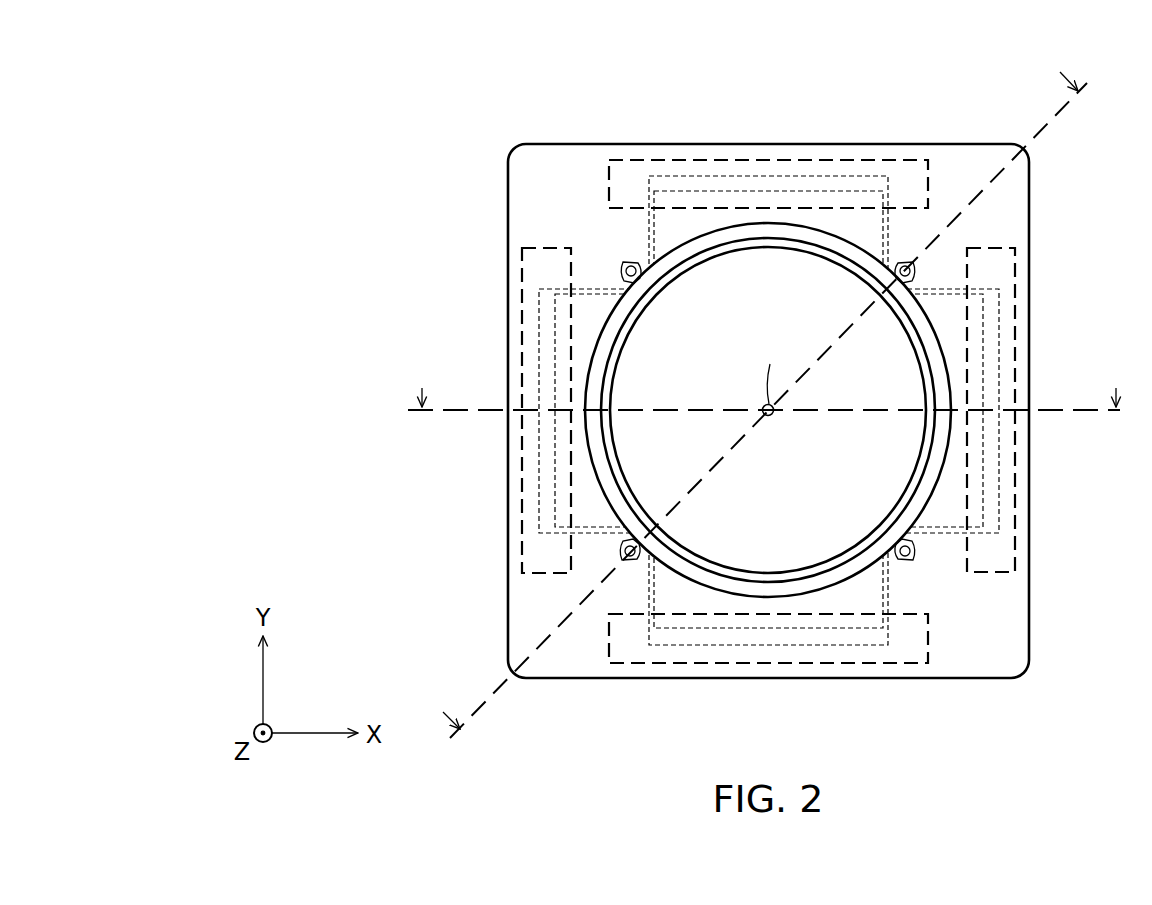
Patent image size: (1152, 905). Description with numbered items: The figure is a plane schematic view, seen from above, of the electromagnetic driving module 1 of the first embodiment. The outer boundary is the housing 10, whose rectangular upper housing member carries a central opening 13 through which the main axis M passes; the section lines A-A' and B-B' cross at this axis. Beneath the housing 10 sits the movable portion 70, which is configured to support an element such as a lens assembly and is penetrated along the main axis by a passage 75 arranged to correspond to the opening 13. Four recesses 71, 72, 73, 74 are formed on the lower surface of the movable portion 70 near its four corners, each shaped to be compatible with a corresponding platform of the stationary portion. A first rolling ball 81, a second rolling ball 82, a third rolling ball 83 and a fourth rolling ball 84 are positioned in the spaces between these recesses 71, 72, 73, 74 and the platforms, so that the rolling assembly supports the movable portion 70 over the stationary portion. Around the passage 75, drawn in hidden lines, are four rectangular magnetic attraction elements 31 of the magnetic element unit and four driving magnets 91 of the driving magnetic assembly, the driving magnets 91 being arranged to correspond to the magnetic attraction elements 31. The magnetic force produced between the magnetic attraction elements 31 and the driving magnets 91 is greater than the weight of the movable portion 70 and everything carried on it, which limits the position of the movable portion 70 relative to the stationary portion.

The electromagnetic driving module 1 is at (447, 110).
The housing 10 is at (549, 144).
The opening 13 is at (765, 222).
The magnetic attraction element 31 is at (1000, 466).
The movable portion 70 is at (706, 245).
The recess 71 is at (623, 271).
The recess 72 is at (905, 262).
The recess 73 is at (914, 551).
The recess 74 is at (631, 561).
The passage 75 is at (811, 294).
The first rolling ball 81 is at (630, 262).
The second rolling ball 82 is at (914, 271).
The third rolling ball 83 is at (905, 561).
The fourth rolling ball 84 is at (622, 551).
The driving magnet 91 is at (1015, 510).